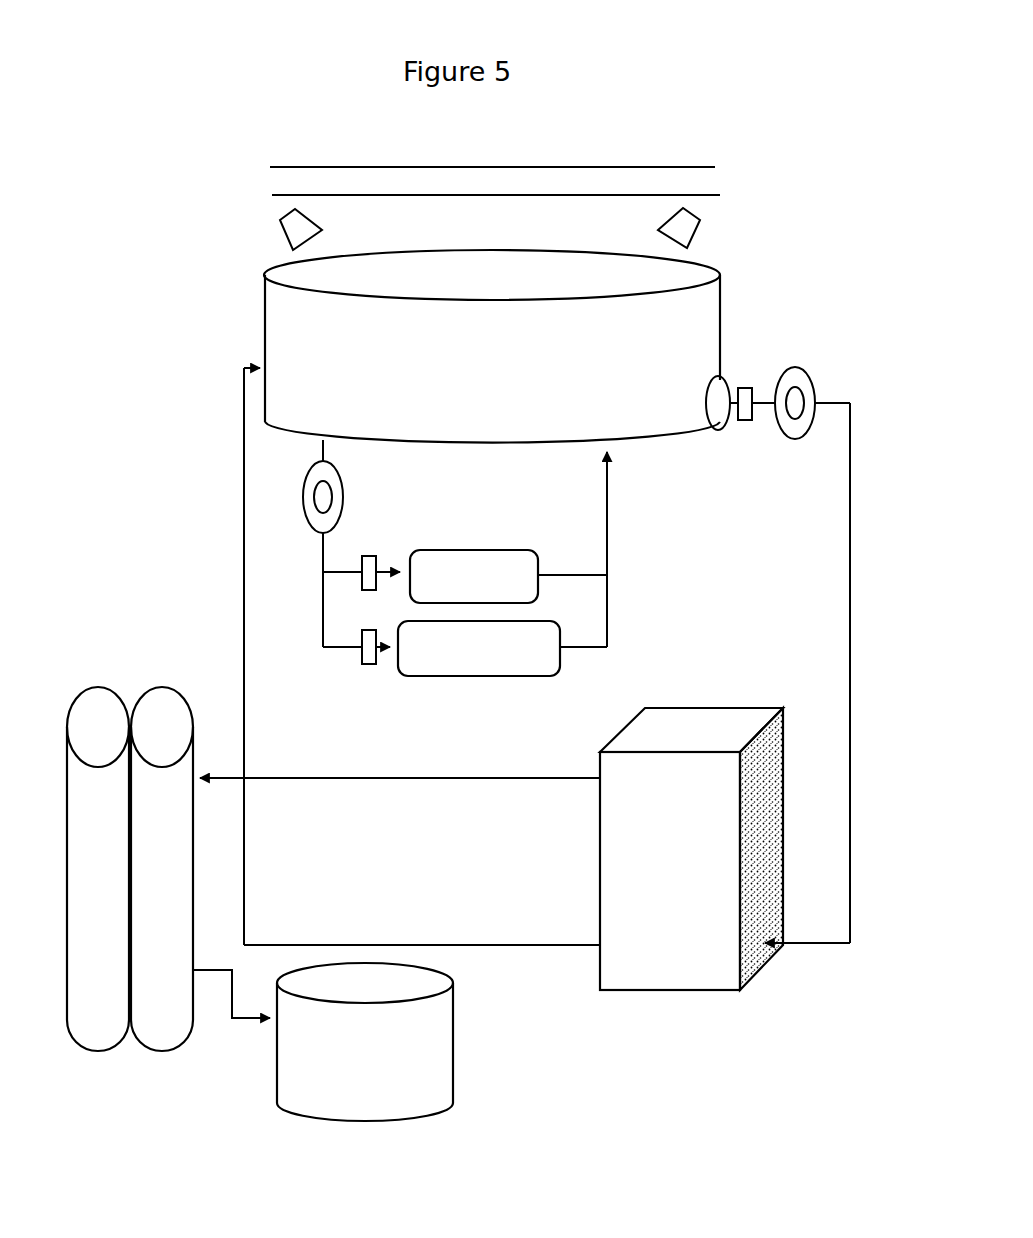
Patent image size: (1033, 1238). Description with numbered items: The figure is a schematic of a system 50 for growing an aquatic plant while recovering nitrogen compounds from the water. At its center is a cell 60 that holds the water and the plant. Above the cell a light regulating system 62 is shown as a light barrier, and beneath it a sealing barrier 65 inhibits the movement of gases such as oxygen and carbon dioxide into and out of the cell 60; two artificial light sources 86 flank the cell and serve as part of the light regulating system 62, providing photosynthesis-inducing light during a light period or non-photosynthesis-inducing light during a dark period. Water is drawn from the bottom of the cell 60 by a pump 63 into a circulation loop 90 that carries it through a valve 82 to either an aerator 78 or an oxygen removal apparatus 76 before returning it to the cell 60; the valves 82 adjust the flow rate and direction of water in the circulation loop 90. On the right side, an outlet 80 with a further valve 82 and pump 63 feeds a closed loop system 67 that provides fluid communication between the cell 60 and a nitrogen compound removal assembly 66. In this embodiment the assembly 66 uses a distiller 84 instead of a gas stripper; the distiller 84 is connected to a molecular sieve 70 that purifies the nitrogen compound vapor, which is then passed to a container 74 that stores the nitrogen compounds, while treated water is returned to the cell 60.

The system 50 is at (438, 143).
The cell 60 is at (268, 315).
The light regulating system 62 is at (305, 167).
The pump 63 is at (793, 440).
The sealing barrier 65 is at (290, 195).
The nitrogen compound removal assembly 66 is at (574, 1106).
The closed loop system 67 is at (80, 396).
The molecular sieve 70 is at (113, 698).
The container 74 is at (456, 1038).
The oxygen removal apparatus 76 is at (553, 658).
The aerator 78 is at (489, 549).
The outlet port 80 is at (723, 380).
The valve 82 is at (740, 422).
The distiller 84 is at (737, 747).
The artificial light source 86 is at (280, 232).
The circulation loop 90 is at (296, 518).